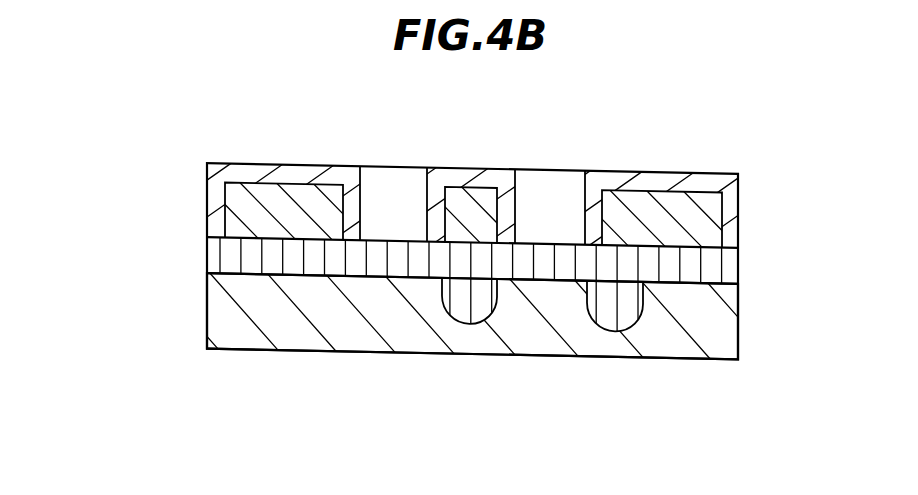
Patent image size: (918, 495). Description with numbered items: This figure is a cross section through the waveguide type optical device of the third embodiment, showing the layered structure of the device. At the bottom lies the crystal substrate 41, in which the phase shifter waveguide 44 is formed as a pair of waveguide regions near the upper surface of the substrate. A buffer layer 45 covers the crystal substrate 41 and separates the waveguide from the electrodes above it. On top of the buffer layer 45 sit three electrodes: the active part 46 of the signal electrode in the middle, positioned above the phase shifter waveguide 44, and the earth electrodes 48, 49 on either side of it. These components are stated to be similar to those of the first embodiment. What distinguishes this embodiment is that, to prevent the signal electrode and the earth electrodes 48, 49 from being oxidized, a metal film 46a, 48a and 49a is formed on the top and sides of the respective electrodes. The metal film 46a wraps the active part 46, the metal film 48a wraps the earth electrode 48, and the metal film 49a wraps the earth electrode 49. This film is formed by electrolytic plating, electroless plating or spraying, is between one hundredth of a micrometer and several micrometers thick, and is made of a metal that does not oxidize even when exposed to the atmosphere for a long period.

The crystal substrate 41 is at (370, 330).
The phase shifter waveguide 44 is at (603, 320).
The buffer layer 45 is at (215, 253).
The active part of signal electrode 46 is at (450, 202).
The metal film 46a is at (500, 180).
The earth electrode 48 is at (660, 197).
The metal film 48a is at (732, 187).
The earth electrode 49 is at (233, 193).
The metal film 49a is at (285, 170).